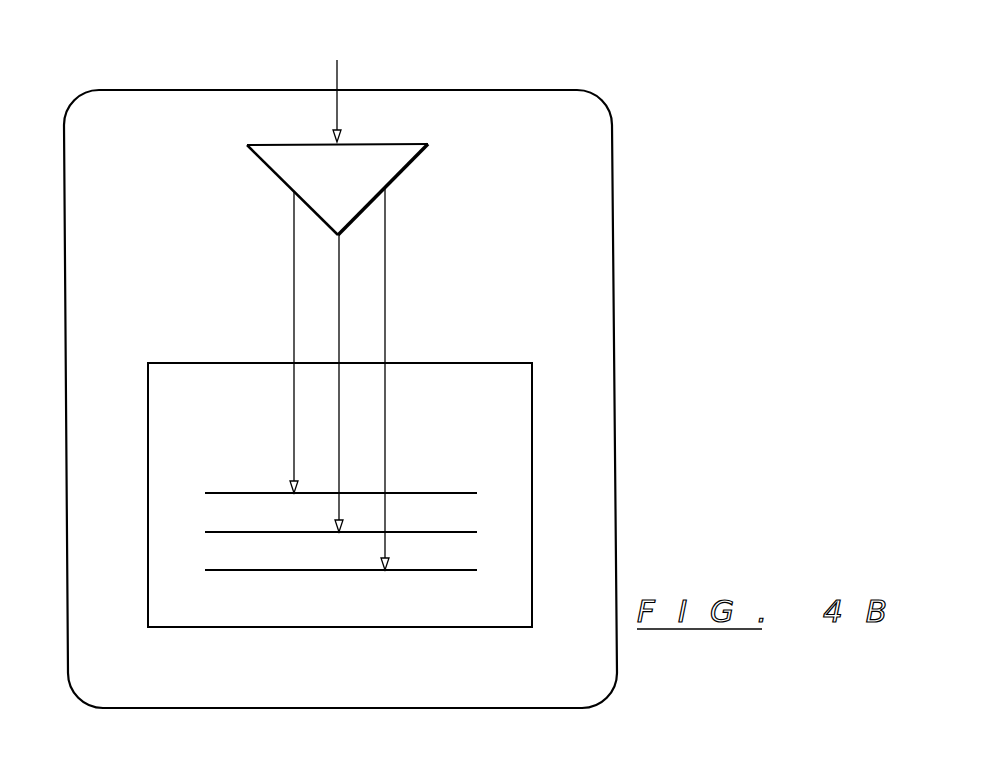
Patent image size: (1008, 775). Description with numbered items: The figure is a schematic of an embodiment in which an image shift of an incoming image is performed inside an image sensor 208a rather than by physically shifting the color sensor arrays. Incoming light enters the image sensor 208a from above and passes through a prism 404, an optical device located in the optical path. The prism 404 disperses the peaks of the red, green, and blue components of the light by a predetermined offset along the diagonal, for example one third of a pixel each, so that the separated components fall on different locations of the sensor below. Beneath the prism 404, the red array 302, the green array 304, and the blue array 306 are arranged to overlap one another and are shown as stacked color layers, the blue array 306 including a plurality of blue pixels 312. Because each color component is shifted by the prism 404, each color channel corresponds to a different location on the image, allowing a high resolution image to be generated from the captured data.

The image sensor 208a is at (634, 95).
The prism 404 is at (410, 165).
The blue pixels 312 is at (470, 362).
The blue array 306 is at (463, 488).
The green array 304 is at (462, 529).
The red array 302 is at (462, 568).